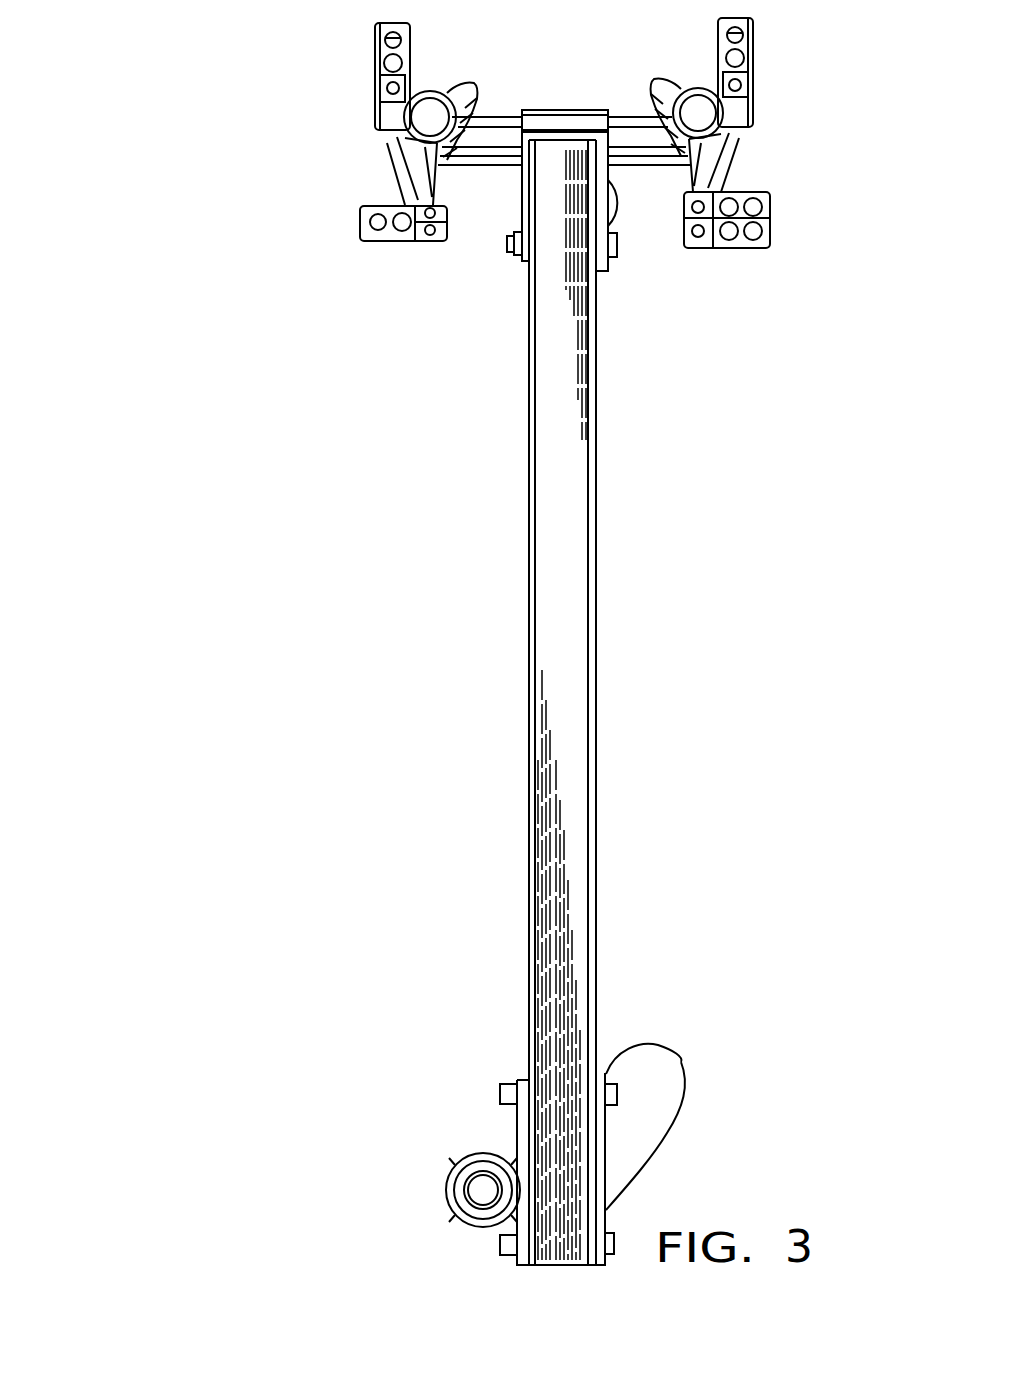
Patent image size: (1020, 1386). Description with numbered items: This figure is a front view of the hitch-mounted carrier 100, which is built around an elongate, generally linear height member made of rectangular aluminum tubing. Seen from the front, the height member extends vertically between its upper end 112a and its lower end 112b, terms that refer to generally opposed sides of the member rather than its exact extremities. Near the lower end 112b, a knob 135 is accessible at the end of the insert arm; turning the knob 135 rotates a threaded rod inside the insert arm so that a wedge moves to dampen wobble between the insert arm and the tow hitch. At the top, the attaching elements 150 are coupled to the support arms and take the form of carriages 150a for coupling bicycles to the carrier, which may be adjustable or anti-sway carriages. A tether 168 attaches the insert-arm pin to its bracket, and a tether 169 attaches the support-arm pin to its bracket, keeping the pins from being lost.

The hitch-mounted carrier 100 is at (212, 57).
The upper end 112a is at (562, 192).
The lower end 112b is at (520, 1263).
The knob 135 is at (457, 1163).
The attaching element 150 is at (780, 40).
The carriage 150a is at (439, 72).
The tether 168 is at (681, 1060).
The tether 169 is at (653, 228).